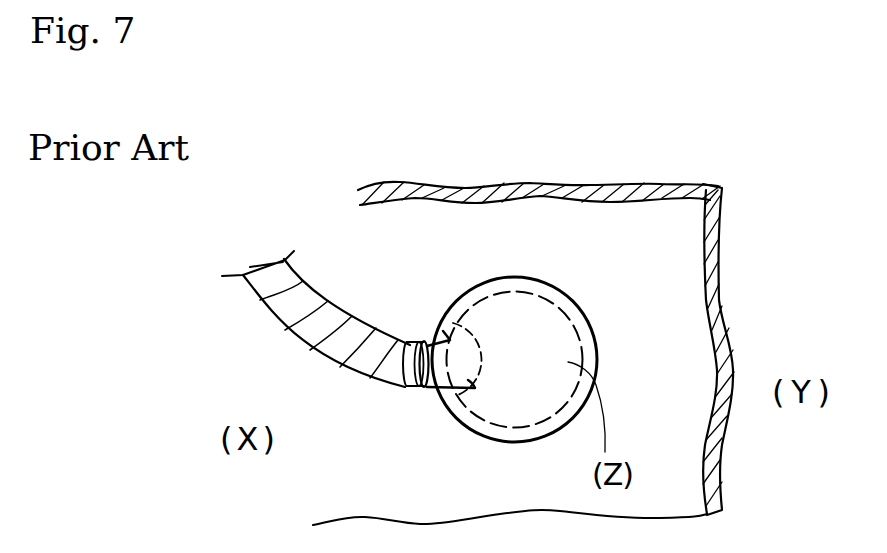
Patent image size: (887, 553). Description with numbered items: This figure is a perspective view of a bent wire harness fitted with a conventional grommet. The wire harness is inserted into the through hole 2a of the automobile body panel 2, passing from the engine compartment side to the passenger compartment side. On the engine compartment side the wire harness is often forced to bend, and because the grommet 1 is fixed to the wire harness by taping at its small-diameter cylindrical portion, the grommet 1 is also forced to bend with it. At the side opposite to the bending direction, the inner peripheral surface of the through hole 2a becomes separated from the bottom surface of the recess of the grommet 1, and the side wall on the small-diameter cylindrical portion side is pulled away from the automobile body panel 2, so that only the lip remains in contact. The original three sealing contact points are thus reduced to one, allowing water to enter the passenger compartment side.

The grommet 1 is at (458, 304).
The automobile body panel 2 is at (673, 292).
The through hole 2a is at (481, 413).